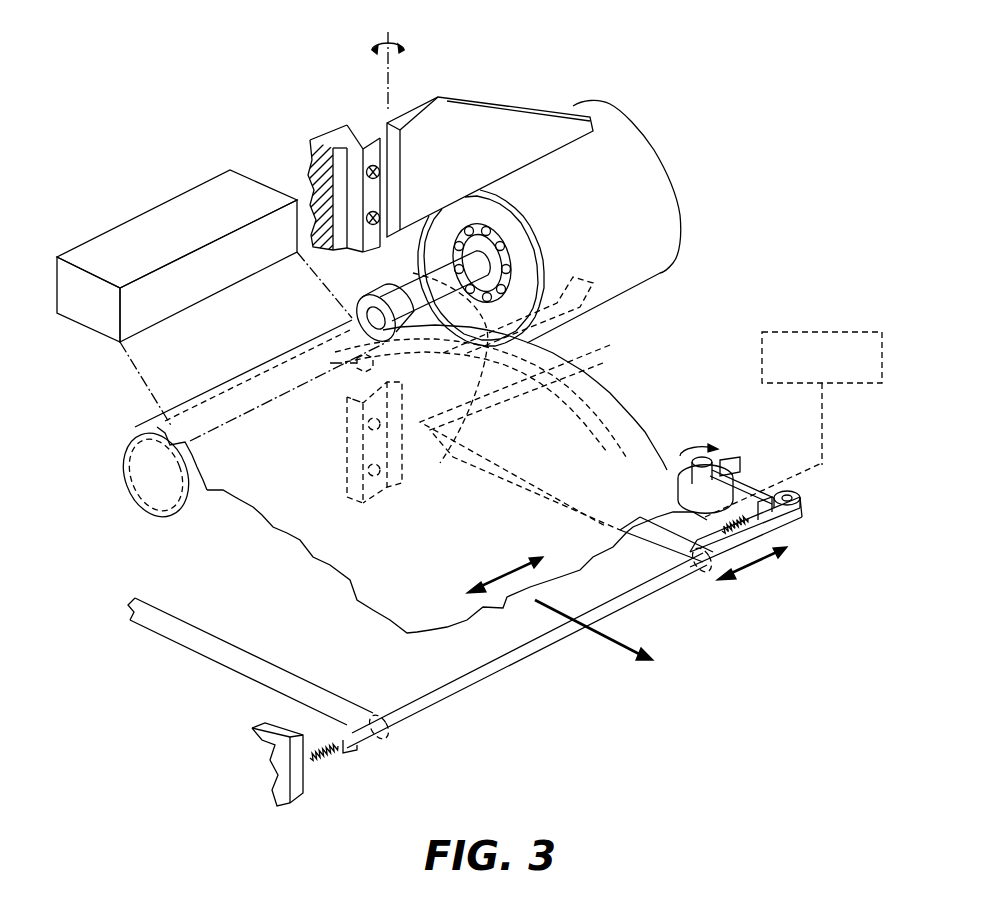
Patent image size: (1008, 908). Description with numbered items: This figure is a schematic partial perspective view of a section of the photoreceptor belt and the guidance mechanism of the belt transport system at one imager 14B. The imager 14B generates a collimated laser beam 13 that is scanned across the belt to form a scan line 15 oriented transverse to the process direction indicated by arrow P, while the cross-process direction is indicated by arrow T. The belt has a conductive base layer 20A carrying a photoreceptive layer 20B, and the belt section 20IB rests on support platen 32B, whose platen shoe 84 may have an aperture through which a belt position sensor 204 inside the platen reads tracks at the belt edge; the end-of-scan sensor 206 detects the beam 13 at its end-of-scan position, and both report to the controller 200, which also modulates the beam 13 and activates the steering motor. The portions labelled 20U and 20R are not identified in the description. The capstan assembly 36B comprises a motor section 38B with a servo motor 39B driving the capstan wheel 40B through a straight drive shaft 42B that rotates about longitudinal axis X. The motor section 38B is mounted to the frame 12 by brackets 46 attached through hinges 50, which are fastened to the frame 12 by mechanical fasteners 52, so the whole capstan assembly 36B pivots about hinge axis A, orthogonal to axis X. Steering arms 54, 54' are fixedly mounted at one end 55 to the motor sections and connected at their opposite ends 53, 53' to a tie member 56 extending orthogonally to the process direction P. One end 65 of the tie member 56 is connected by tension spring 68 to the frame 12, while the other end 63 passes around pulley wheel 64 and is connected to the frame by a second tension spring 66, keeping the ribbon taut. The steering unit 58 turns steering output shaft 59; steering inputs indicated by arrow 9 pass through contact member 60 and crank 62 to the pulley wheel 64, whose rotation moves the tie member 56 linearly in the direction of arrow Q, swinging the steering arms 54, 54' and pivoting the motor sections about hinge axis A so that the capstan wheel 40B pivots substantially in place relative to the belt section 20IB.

The hinge axis A is at (394, 34).
The steering input arrow 9 is at (694, 446).
The frame 12 is at (338, 132).
The laser beam 13 is at (307, 278).
The imager 14B is at (196, 240).
The scan line 15 is at (240, 413).
The longitudinal axis X is at (352, 320).
The base layer 20A is at (387, 623).
The photoreceptive layer 20B is at (367, 582).
The belt section 20IB is at (157, 427).
The web upper portion 20U is at (620, 398).
The web right portion 20R is at (633, 421).
The support platen 32B is at (162, 500).
The capstan assembly 36B is at (664, 222).
The motor section 38B is at (645, 172).
The motor 39B is at (516, 256).
The capstan wheel 40B is at (368, 298).
The drive shaft 42B is at (416, 292).
The brackets 46 is at (500, 120).
The hinges 50 is at (374, 136).
The mechanical fasteners 52 is at (367, 216).
The opposite end of steering arm 53 is at (695, 591).
The opposite end of steering arm 53' is at (377, 702).
The steering arm 54 is at (660, 552).
The steering arm 54' is at (250, 661).
The end of steering arm 55 is at (403, 485).
The tie member 56 is at (500, 663).
The steering unit 58 is at (737, 464).
The steering output shaft 59 is at (703, 456).
The contact member 60 is at (741, 465).
The crank member 62 is at (815, 473).
The other end of tie member 63 is at (802, 517).
The pulley wheel 64 is at (803, 500).
The one end of tie member 65 is at (352, 745).
The second tension spring 66 is at (708, 518).
The tension spring 68 is at (323, 755).
The platen shoe 84 is at (200, 497).
The controller 200 is at (843, 370).
The belt position sensor 204 is at (347, 358).
The end-of-scan sensor 206 is at (598, 360).
The cross-process direction arrow T is at (500, 573).
The process direction arrow P is at (607, 640).
The tie member movement arrow Q is at (758, 562).